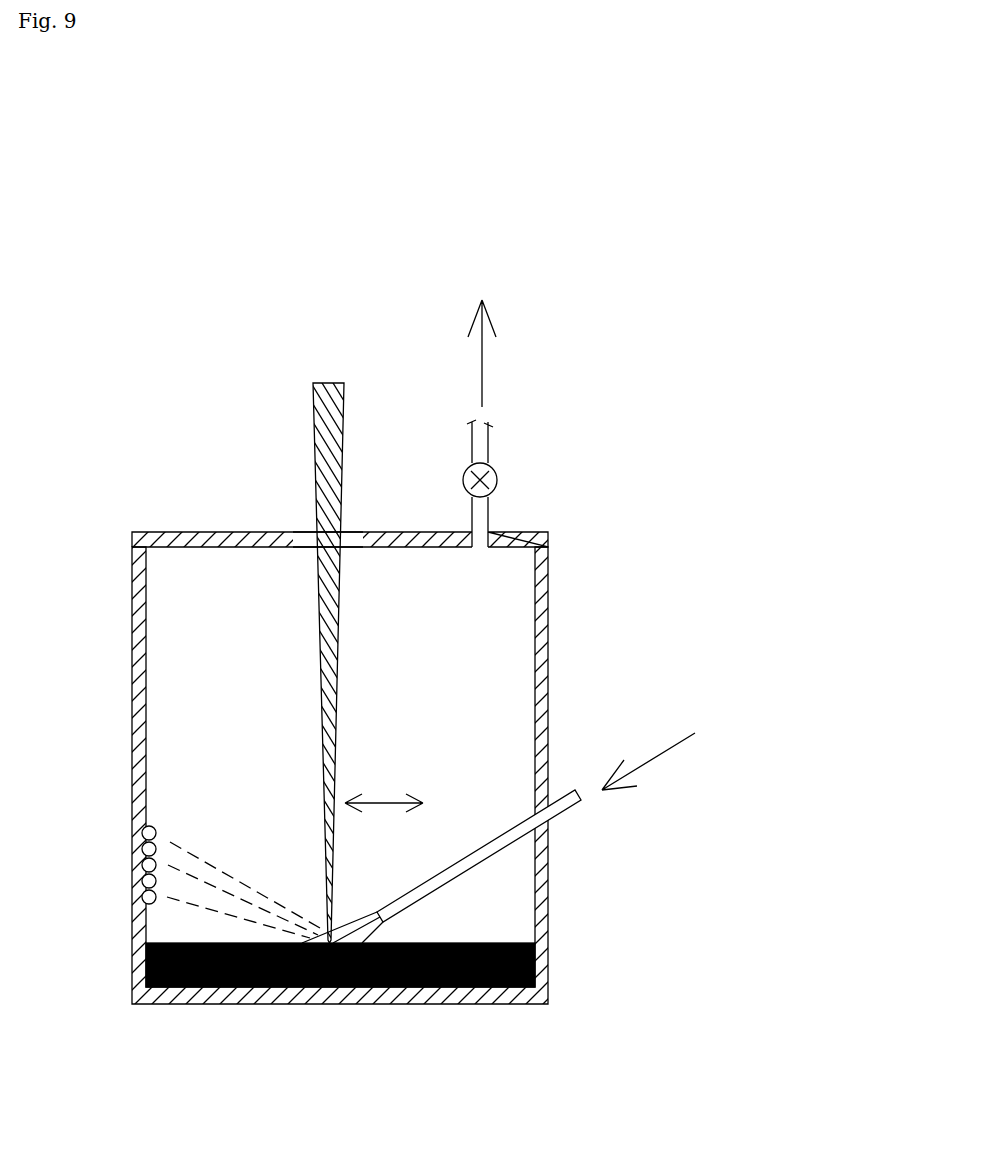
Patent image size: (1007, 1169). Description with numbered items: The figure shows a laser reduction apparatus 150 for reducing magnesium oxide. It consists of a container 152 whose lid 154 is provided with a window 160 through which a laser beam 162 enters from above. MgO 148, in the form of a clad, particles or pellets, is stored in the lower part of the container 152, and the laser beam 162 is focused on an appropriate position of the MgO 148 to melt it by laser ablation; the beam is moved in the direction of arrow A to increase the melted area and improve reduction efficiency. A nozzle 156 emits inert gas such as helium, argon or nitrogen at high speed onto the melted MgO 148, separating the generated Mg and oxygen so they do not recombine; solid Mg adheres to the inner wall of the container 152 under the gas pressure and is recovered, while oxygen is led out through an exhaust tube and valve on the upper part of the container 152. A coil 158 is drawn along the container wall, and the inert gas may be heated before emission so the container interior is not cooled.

The MgO 148 is at (143, 960).
The laser reduction apparatus 150 is at (550, 517).
The container 152 is at (232, 533).
The lid 154 is at (398, 540).
The nozzle 156 is at (562, 807).
The heating coil 158 is at (140, 841).
The window 160 is at (296, 542).
The laser beam 162 is at (325, 612).